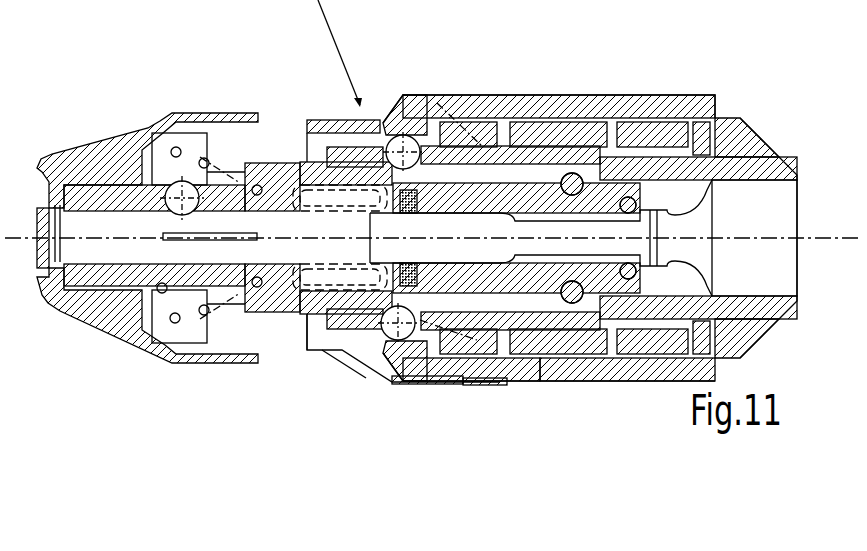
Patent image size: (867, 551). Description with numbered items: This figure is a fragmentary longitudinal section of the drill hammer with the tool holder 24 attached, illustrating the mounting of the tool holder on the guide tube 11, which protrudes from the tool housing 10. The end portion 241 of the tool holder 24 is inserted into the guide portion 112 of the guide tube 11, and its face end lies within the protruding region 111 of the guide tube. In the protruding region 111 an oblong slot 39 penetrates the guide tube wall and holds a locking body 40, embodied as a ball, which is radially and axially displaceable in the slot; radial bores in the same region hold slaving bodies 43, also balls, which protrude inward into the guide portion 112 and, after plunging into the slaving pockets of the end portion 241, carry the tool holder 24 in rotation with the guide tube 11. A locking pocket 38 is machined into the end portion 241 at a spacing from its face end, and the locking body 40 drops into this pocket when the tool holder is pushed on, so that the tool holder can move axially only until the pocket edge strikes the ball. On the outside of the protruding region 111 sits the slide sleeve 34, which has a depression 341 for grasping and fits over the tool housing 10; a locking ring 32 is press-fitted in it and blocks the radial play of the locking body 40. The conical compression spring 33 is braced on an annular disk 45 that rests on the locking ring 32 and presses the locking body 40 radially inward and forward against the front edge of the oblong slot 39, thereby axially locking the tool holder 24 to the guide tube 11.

The tool housing 10 is at (642, 100).
The guide tube 11 is at (685, 100).
The tool holder 24 is at (63, 140).
The end portion 241 is at (322, 346).
The locking ring 32 is at (390, 387).
The compression spring 33 is at (462, 112).
The slide sleeve 34 is at (493, 383).
The depression 341 is at (440, 387).
The locking pocket 38 is at (305, 122).
The oblong slot 39 is at (495, 112).
The locking body 40 is at (397, 132).
The slaving body 43 is at (362, 345).
The annular disk 45 is at (432, 125).
The protruding region 111 is at (373, 118).
The guide portion 112 is at (308, 125).